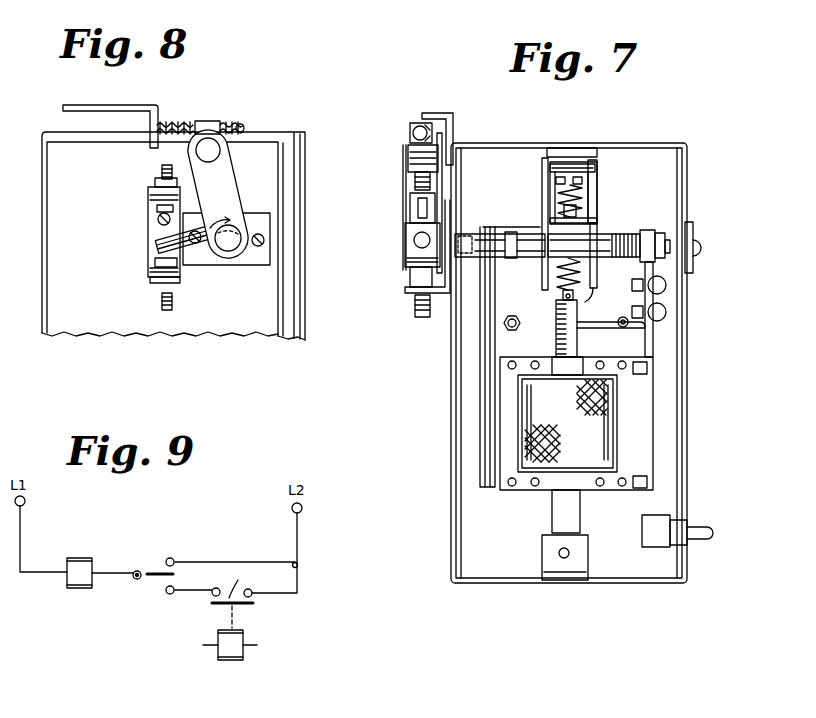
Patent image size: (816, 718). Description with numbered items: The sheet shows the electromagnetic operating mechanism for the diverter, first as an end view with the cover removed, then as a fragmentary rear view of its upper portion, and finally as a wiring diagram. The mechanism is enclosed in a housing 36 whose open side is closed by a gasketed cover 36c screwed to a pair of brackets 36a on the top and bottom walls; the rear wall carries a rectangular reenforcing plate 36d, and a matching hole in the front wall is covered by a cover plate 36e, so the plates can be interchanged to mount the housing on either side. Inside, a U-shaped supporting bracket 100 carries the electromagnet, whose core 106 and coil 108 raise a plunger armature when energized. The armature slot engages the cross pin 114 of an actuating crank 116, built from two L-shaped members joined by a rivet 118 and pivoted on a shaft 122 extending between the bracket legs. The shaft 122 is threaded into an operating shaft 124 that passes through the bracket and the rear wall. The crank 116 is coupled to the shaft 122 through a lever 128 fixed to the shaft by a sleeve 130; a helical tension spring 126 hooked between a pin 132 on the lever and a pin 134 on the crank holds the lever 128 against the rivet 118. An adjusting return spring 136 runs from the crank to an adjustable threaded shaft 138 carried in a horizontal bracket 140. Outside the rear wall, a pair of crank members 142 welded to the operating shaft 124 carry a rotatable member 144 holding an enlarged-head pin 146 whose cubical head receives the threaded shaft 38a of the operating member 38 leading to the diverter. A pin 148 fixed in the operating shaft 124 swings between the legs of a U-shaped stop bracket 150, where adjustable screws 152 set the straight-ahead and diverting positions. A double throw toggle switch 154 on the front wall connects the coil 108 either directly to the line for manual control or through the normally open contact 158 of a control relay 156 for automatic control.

In FIG. 7, the housing 36 is at (657, 143).
In FIG. 7, the bracket 36a is at (549, 150).
In FIG. 8, the gasketed cover 36c is at (297, 298).
In FIG. 8, the reenforcing plate 36d is at (263, 267).
In FIG. 7, the cover plate 36e is at (698, 240).
In FIG. 8, the operating member 38 is at (94, 105).
In FIG. 7, the operating member 38 is at (430, 112).
In FIG. 8, the threaded shaft 38a is at (244, 127).
In FIG. 7, the threaded shaft 38a is at (410, 133).
In FIG. 7, the supporting bracket 100 is at (483, 390).
In FIG. 7, the core 106 is at (553, 490).
In FIG. 7, the coil 108 is at (575, 419).
In FIG. 9, the coil 108 is at (78, 558).
In FIG. 7, the cross pin 114 is at (595, 290).
In FIG. 7, the actuating crank 116 is at (542, 172).
In FIG. 7, the rivet 118 is at (590, 162).
In FIG. 7, the shaft 122 is at (630, 240).
In FIG. 7, the operating shaft 124 is at (467, 233).
In FIG. 7, the helical tension spring 126 is at (560, 200).
In FIG. 7, the lever 128 is at (592, 188).
In FIG. 7, the sleeve 130 is at (562, 253).
In FIG. 7, the pin 132 is at (583, 180).
In FIG. 7, the pin 134 is at (597, 222).
In FIG. 7, the adjusting return spring 136 is at (563, 295).
In FIG. 7, the adjustable threaded shaft 138 is at (556, 349).
In FIG. 7, the bracket 140 is at (606, 328).
In FIG. 8, the crank member 142 is at (231, 191).
In FIG. 7, the crank member 142 is at (410, 222).
In FIG. 8, the rotatable member 144 is at (212, 152).
In FIG. 7, the rotatable member 144 is at (408, 157).
In FIG. 8, the enlarged-head pin 146 is at (213, 121).
In FIG. 8, the pin 148 is at (157, 250).
In FIG. 7, the pin 148 is at (414, 240).
In FIG. 8, the stop bracket 150 is at (148, 215).
In FIG. 7, the stop bracket 150 is at (445, 293).
In FIG. 8, the screw 152 is at (162, 168).
In FIG. 7, the screw 152 is at (415, 180).
In FIG. 7, the double throw toggle switch 154 is at (642, 540).
In FIG. 9, the double throw toggle switch 154 is at (160, 570).
In FIG. 9, the control relay 156 is at (235, 660).
In FIG. 9, the normally open contact 158 is at (233, 587).